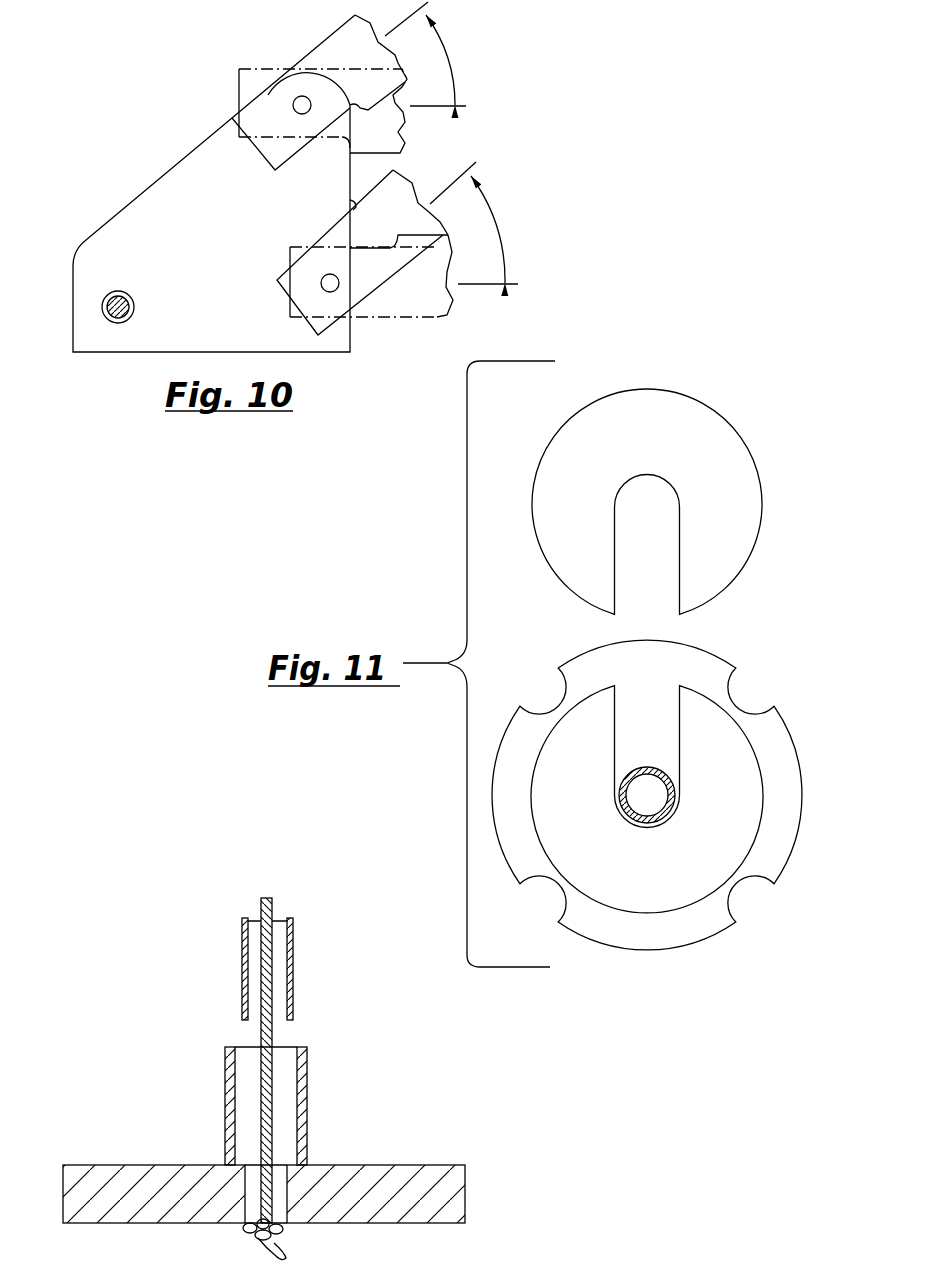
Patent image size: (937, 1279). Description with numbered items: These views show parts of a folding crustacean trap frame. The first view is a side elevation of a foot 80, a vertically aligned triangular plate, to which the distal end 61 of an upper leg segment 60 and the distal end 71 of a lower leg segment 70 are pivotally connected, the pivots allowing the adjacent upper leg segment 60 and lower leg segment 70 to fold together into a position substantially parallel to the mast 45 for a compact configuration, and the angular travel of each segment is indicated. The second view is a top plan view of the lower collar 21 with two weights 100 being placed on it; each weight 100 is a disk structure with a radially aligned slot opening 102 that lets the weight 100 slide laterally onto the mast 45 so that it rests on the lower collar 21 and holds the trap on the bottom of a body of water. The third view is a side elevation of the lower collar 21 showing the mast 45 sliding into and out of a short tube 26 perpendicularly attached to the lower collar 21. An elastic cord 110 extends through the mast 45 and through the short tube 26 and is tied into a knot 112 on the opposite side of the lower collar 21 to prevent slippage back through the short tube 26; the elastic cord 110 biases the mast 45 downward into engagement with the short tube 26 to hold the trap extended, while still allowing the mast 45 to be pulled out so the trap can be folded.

In FIG. 12, the lower collar 21 is at (400, 1165).
In FIG. 12, the short tube 26 is at (310, 1090).
In FIG. 11, the mast 45 is at (622, 794).
In FIG. 12, the mast 45 is at (296, 968).
In FIG. 10, the upper leg segment 60 is at (326, 43).
In FIG. 10, the distal end of the upper leg segment 61 is at (262, 100).
In FIG. 10, the lower leg segment 70 is at (384, 210).
In FIG. 11, the lower leg segment 70 is at (712, 657).
In FIG. 10, the distal end of the lower leg segment 71 is at (305, 272).
In FIG. 10, the foot 80 is at (137, 216).
In FIG. 11, the weight 100 is at (716, 437).
In FIG. 11, the slot opening 102 is at (646, 716).
In FIG. 12, the elastic cord 110 is at (273, 912).
In FIG. 12, the knot 112 is at (255, 1232).